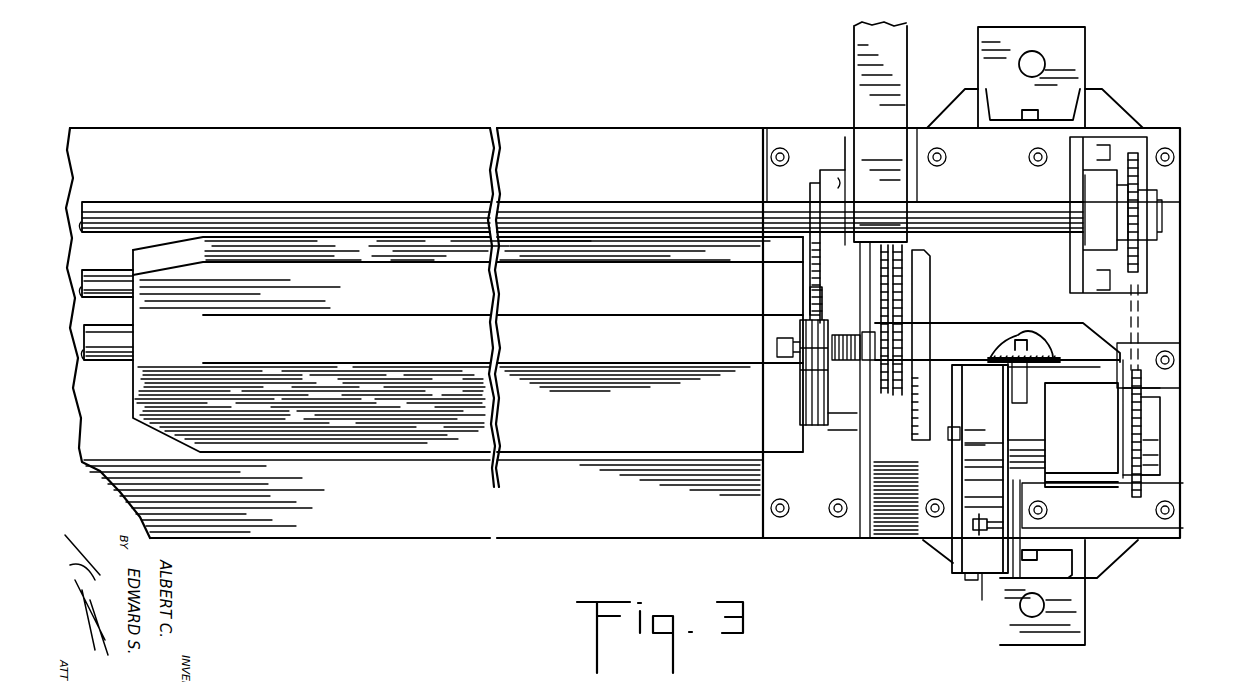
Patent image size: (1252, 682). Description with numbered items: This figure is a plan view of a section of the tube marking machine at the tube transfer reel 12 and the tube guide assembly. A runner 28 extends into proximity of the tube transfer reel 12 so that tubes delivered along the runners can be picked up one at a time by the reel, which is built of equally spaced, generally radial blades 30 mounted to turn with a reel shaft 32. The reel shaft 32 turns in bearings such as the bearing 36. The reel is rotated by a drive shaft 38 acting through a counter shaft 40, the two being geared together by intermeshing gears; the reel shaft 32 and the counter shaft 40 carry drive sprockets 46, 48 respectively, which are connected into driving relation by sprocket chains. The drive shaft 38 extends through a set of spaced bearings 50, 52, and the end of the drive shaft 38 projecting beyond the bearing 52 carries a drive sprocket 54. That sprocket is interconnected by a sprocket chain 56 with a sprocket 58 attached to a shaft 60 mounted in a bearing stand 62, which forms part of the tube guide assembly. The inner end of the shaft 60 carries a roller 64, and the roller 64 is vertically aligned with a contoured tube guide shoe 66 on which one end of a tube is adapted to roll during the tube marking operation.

The tube transfer reel 12 is at (646, 417).
The runner 28 is at (854, 62).
The radial blade 30 is at (310, 250).
The reel shaft 32 is at (103, 347).
The bearing 36 is at (845, 383).
The drive shaft 38 is at (548, 212).
The counter shaft 40 is at (108, 276).
The drive sprocket 46 is at (896, 394).
The drive sprocket 48 is at (900, 270).
The bearing 50 is at (832, 176).
The bearing 52 is at (1100, 237).
The drive sprocket 54 is at (1140, 262).
The sprocket chain 56 is at (1140, 308).
The sprocket 58 is at (1141, 410).
The shaft 60 is at (1160, 430).
The bearing stand 62 is at (1100, 474).
The roller 64 is at (973, 467).
The contoured tube guide shoe 66 is at (972, 512).